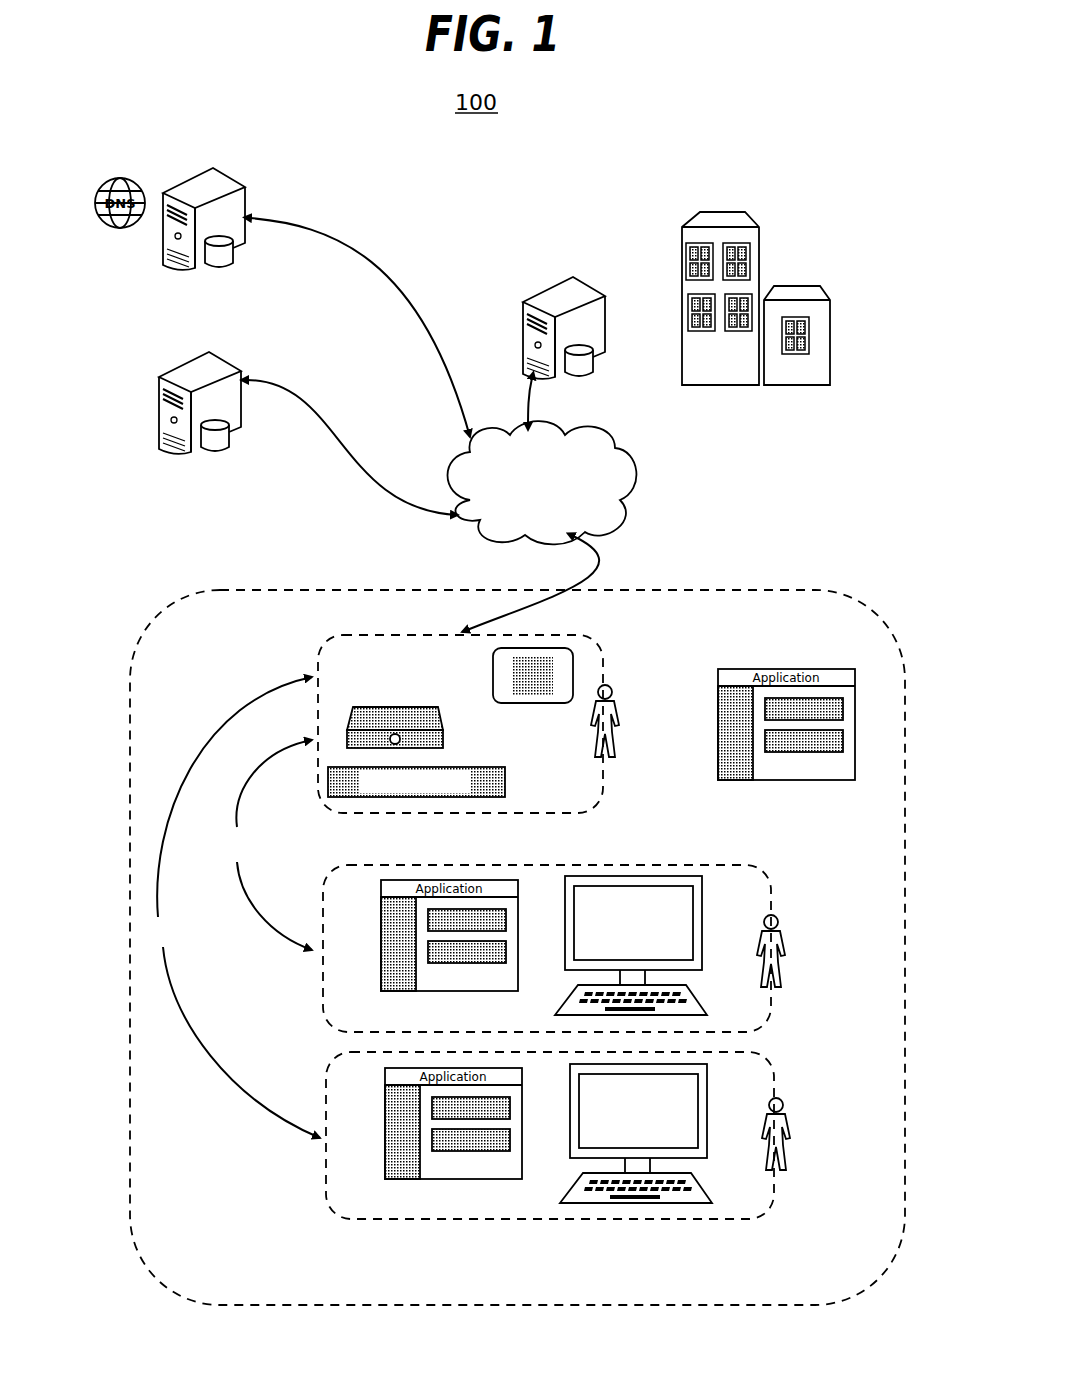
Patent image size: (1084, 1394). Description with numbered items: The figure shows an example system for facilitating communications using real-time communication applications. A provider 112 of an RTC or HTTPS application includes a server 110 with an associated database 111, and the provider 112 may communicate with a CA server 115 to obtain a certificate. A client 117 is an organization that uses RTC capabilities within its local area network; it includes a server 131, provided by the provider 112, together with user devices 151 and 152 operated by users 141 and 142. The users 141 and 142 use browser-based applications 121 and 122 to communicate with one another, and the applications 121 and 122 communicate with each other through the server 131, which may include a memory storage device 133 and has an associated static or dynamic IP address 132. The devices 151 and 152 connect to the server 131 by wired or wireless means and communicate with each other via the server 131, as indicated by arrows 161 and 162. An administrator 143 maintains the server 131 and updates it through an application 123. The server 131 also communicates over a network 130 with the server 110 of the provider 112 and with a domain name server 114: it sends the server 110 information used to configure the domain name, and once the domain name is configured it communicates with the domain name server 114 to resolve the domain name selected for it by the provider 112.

The server 110 is at (572, 284).
The database 111 is at (582, 352).
The provider 112 is at (793, 288).
The domain name server 114 is at (212, 178).
The CA server 115 is at (208, 360).
The client 117 is at (151, 636).
The application 121 is at (390, 973).
The application 122 is at (395, 1160).
The application 123 is at (762, 668).
The network 130 is at (542, 482).
The server 131 is at (387, 708).
The IP address 132 is at (462, 767).
The memory storage device 133 is at (545, 707).
The user 141 is at (779, 968).
The user 142 is at (783, 1160).
The administrator 143 is at (612, 742).
The user device 151 is at (697, 924).
The user device 152 is at (702, 1112).
The arrow 161 is at (264, 845).
The arrow 162 is at (231, 907).